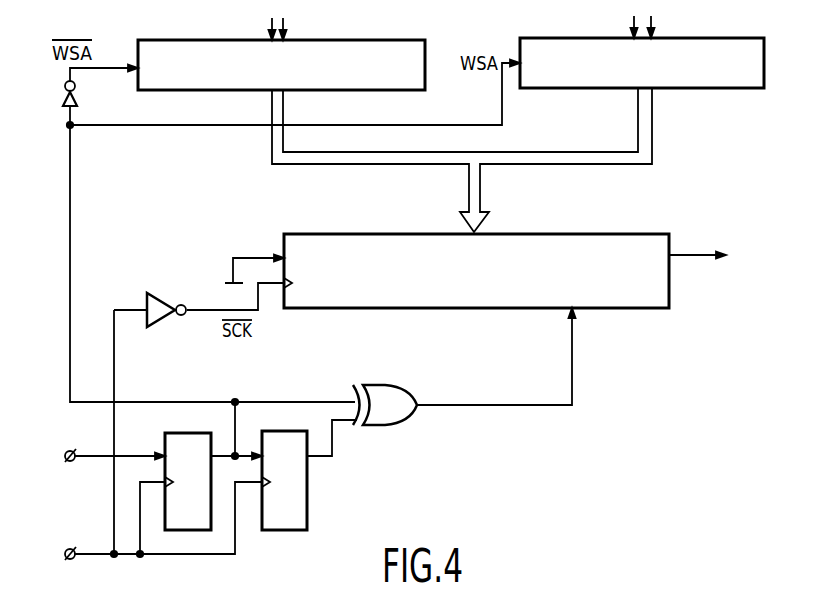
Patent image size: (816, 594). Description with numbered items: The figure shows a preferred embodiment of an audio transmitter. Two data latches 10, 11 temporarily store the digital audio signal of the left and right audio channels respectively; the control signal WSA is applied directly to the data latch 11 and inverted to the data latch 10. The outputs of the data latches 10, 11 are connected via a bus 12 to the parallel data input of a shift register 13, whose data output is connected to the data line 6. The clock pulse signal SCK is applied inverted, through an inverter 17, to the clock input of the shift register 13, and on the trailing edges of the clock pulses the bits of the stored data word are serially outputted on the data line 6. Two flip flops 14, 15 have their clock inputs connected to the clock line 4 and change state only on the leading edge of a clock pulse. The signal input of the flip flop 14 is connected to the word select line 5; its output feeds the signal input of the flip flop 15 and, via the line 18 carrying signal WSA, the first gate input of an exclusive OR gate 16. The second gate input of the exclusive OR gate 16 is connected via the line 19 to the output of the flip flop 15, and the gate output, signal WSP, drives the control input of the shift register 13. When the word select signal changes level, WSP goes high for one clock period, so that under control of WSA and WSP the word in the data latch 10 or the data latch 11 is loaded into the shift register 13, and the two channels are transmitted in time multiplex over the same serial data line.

The data latch 10 is at (405, 40).
The data latch 11 is at (722, 38).
The bus 12 is at (481, 185).
The shift register 13 is at (566, 233).
The data line 6 is at (689, 253).
The inverter 17 is at (163, 292).
The line 18 is at (258, 398).
The word select line 5 is at (87, 452).
The flip flop 14 is at (172, 433).
The clock line 4 is at (87, 552).
The flip flop 15 is at (307, 505).
The line 19 is at (332, 458).
The exclusive OR gate 16 is at (396, 425).